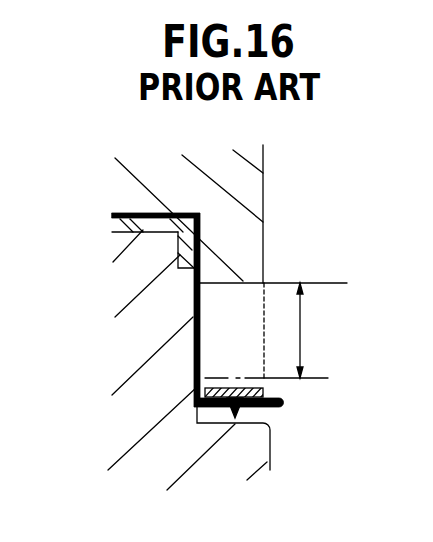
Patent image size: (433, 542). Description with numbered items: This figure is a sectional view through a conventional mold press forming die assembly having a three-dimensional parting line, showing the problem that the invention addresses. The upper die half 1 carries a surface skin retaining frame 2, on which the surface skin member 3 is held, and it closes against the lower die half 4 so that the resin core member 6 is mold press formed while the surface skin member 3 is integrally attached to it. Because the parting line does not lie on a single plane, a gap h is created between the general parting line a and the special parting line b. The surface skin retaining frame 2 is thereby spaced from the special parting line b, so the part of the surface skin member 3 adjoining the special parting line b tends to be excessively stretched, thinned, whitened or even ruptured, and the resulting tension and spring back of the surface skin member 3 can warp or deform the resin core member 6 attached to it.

The upper die half 1 is at (253, 190).
The surface skin retaining frame 2 is at (236, 397).
The surface skin member 3 is at (128, 213).
The lower die half 4 is at (146, 388).
The resin core member 6 is at (117, 232).
The general parting line a is at (265, 380).
The special parting line b is at (238, 280).
The gap h is at (292, 330).